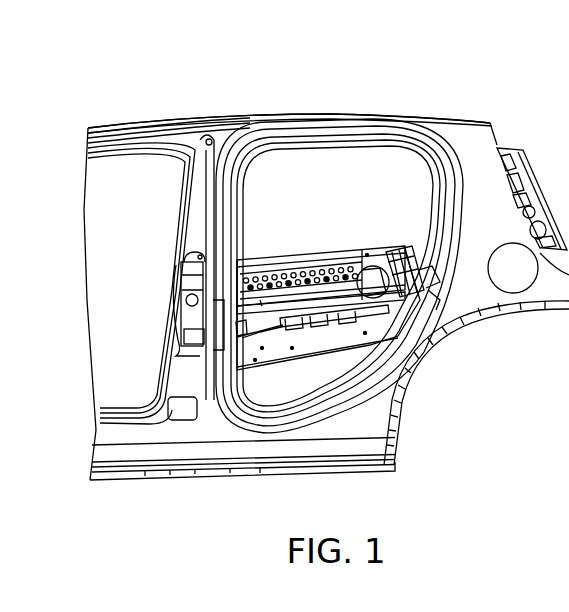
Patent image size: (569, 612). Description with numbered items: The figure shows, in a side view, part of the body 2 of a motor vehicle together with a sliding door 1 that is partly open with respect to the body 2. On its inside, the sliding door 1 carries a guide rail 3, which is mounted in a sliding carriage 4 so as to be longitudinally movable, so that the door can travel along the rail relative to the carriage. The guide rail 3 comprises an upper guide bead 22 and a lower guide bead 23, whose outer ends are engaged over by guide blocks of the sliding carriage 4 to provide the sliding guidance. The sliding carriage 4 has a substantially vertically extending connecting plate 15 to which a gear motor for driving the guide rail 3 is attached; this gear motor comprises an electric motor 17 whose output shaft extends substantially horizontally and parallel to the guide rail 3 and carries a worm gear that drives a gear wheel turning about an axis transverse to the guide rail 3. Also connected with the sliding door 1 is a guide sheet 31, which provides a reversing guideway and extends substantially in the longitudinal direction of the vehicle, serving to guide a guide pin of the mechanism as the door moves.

The sliding door 1 is at (326, 297).
The body 2 is at (241, 124).
The guide rail 3 is at (297, 213).
The sliding carriage 4 is at (377, 229).
The upper guide bead 22 is at (278, 262).
The connecting plate 15 is at (372, 252).
The electric motor 17 is at (385, 262).
The lower guide bead 23 is at (262, 302).
The guide sheet 31 is at (311, 320).